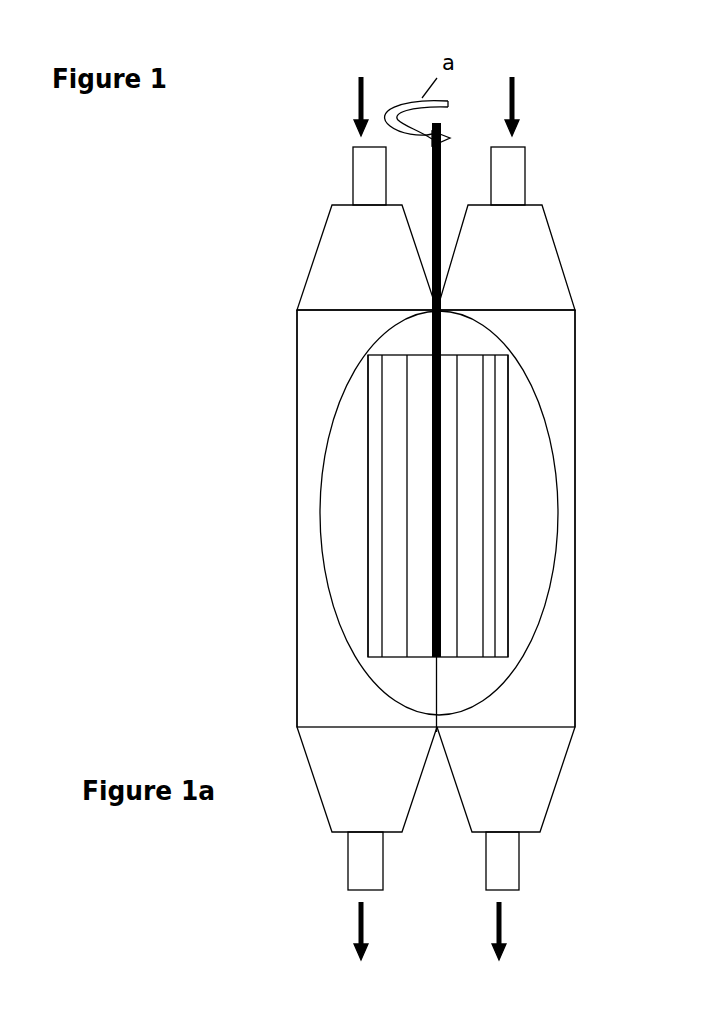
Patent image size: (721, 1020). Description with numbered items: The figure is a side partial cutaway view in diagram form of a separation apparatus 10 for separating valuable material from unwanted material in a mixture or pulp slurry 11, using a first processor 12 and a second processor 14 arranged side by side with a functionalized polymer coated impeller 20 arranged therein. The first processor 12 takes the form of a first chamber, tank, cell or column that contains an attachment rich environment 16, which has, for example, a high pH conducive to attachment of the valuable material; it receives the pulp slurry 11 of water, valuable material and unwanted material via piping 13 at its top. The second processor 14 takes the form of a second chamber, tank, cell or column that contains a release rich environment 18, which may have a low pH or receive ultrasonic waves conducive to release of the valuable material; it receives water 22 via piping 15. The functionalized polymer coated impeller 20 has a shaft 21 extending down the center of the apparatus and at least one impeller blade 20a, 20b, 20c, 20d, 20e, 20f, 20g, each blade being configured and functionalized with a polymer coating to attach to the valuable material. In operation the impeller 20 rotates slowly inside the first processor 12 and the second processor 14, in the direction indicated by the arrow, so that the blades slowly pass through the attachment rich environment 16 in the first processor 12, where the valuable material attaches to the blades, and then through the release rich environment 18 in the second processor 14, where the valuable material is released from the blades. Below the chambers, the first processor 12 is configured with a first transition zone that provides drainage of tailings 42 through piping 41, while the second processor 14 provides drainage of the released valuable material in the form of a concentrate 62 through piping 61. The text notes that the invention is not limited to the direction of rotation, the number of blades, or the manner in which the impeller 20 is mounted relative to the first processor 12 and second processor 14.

In FIG. 1, the apparatus 10 is at (182, 213).
In FIG. 1, the mixture or pulp slurry 11 is at (317, 111).
In FIG. 1, the first processor 12 is at (312, 257).
In FIG. 1, the piping 13 is at (353, 175).
In FIG. 1, the second processor 14 is at (559, 251).
In FIG. 1, the piping 15 is at (525, 176).
In FIG. 1, the attachment rich environment 16 is at (297, 358).
In FIG. 1, the release rich environment 18 is at (558, 350).
In FIG. 1, the functionalized polymer coated impeller 20 is at (275, 500).
In FIG. 1, the impeller blade 20a is at (368, 470).
In FIG. 1, the impeller blade 20b is at (382, 525).
In FIG. 1, the impeller blade 20c is at (405, 548).
In FIG. 1, the impeller blade 20d is at (458, 578).
In FIG. 1, the impeller blade 20e is at (483, 502).
In FIG. 1, the impeller blade 20f is at (495, 452).
In FIG. 1, the impeller blade 20g is at (508, 403).
In FIG. 1, the shaft 21 is at (441, 185).
In FIG. 1, the water 22 is at (556, 103).
In FIG. 1A, the piping 41 is at (348, 853).
In FIG. 1A, the tailings 42 is at (318, 939).
In FIG. 1A, the piping 61 is at (519, 860).
In FIG. 1A, the concentrate 62 is at (569, 939).